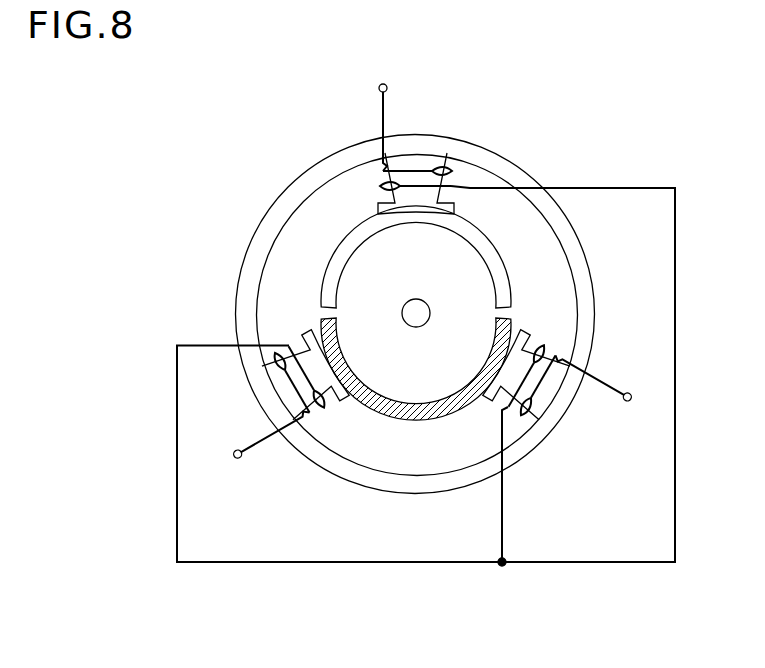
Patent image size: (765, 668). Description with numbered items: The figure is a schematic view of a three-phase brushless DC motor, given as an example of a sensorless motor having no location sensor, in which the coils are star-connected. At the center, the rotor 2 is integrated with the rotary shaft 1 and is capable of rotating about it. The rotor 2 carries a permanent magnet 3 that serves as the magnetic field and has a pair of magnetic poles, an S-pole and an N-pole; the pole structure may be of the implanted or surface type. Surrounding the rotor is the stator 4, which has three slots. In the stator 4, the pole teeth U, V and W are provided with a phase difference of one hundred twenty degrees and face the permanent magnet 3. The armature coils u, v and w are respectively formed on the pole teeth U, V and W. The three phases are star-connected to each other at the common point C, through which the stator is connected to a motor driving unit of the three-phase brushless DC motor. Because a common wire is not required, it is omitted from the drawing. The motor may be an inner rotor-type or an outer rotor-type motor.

The rotor shaft 1 is at (402, 312).
The rotor 2 is at (398, 301).
The permanent magnet 3 is at (505, 282).
The stator 4 is at (524, 162).
The pole tooth U is at (406, 127).
The pole tooth V is at (592, 399).
The pole tooth W is at (264, 430).
The coil u is at (399, 183).
The coil v is at (528, 367).
The coil w is at (304, 385).
The common point C is at (502, 566).